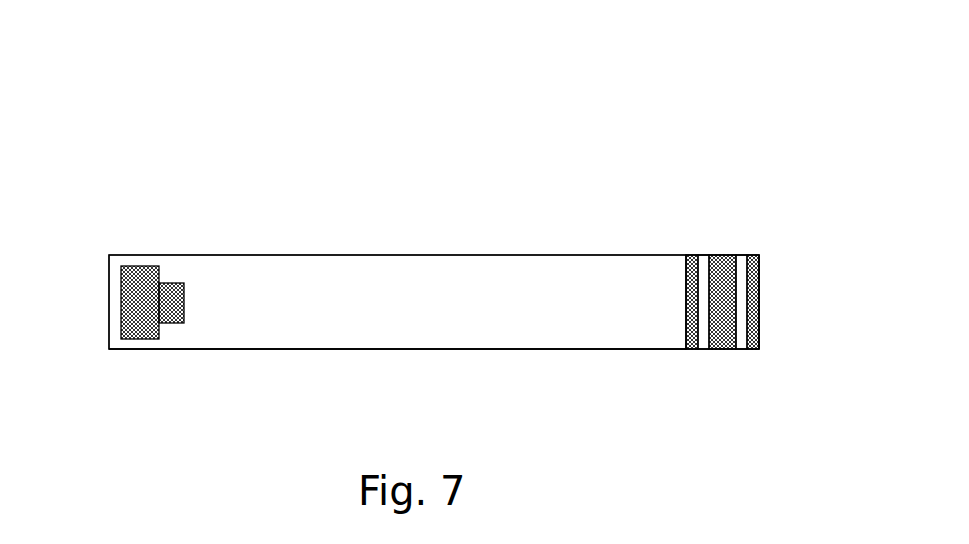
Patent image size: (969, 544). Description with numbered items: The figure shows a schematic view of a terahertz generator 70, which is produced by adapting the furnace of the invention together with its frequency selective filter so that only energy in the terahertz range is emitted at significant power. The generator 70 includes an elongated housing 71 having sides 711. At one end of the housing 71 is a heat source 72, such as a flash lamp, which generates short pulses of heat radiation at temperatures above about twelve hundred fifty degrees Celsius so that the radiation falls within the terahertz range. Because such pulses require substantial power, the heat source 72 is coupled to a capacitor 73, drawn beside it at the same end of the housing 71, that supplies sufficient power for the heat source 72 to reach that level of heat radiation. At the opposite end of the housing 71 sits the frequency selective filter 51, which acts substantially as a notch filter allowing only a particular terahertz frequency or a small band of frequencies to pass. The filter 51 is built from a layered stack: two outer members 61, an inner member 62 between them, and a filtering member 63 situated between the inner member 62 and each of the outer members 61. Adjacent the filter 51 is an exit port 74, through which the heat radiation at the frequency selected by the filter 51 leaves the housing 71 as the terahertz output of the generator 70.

The THz generator 70 is at (309, 147).
The housing 71 is at (147, 255).
The sides 711 is at (275, 349).
The heat source 72 is at (169, 323).
The capacitor 73 is at (130, 267).
The frequency selective filter 51 is at (687, 277).
The outer members 61 is at (687, 302).
The inner member 62 is at (715, 349).
The filtering member 63 is at (704, 263).
The exit port 74 is at (759, 282).